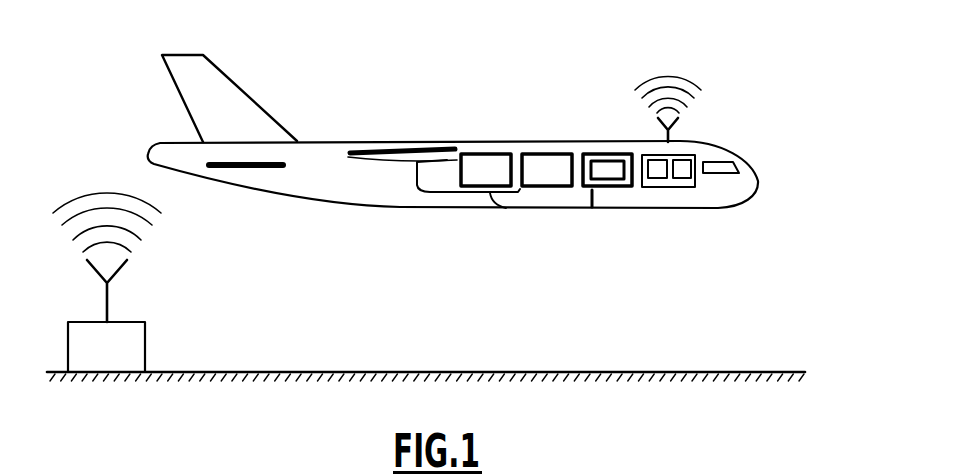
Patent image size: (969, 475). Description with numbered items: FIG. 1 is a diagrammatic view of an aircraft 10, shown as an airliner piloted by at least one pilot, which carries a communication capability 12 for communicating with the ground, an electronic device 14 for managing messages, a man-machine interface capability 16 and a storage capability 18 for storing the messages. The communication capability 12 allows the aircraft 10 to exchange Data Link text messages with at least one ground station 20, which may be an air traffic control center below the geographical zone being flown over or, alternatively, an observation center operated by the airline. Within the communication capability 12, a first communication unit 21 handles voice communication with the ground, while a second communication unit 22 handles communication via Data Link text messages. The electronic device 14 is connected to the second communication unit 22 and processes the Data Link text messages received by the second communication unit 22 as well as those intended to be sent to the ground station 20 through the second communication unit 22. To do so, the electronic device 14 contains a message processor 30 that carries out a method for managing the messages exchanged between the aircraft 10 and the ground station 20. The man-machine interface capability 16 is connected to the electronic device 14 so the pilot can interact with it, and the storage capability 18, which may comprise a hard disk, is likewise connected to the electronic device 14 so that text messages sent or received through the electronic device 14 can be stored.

The aircraft 10 is at (382, 131).
The communication capability 12 is at (705, 178).
The electronic device 14 is at (608, 152).
The man-machine interface capability 16 is at (545, 163).
The storage capability 18 is at (490, 163).
The ground station 20 is at (107, 282).
The first communication unit 21 is at (678, 188).
The second communication unit 22 is at (652, 188).
The message processor 30 is at (608, 181).